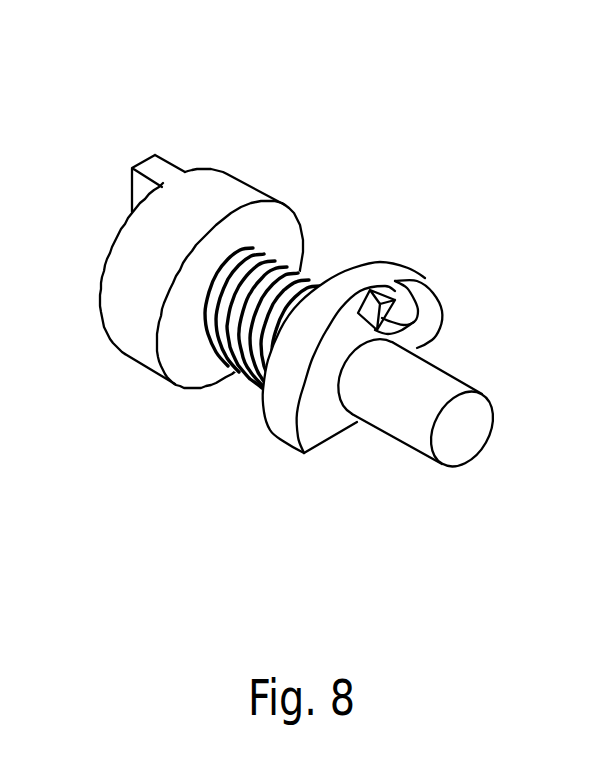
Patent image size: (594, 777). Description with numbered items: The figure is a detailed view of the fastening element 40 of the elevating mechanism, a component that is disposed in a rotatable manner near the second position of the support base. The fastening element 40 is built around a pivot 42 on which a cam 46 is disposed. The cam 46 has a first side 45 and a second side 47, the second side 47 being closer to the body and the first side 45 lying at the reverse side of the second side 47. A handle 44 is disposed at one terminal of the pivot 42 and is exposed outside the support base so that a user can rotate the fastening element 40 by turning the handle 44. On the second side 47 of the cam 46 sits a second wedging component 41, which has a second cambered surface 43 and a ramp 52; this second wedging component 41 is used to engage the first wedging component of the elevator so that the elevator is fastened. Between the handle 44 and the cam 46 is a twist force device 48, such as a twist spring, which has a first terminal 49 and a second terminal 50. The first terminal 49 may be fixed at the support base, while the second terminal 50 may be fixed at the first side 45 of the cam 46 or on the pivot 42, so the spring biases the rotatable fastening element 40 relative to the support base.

The fastening element 40 is at (335, 278).
The second wedging component 41 is at (427, 305).
The pivot 42 is at (466, 444).
The second cambered surface 43 is at (440, 336).
The handle 44 is at (223, 187).
The first side 45 is at (330, 371).
The cam 46 is at (320, 450).
The second side 47 is at (333, 420).
The twist force device 48 is at (228, 366).
The first terminal 49 is at (257, 247).
The second terminal 50 is at (320, 280).
The ramp 52 is at (388, 284).